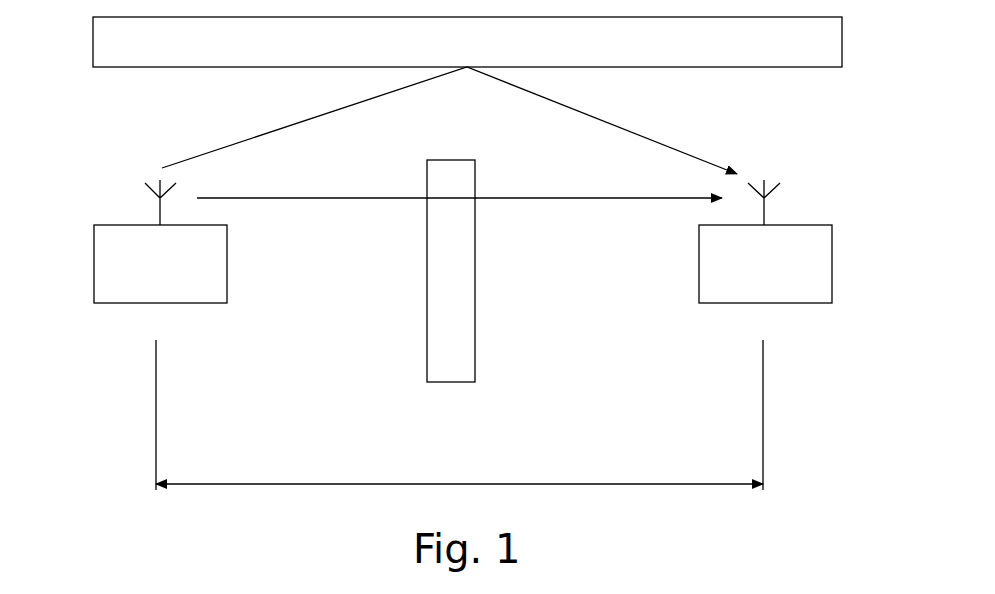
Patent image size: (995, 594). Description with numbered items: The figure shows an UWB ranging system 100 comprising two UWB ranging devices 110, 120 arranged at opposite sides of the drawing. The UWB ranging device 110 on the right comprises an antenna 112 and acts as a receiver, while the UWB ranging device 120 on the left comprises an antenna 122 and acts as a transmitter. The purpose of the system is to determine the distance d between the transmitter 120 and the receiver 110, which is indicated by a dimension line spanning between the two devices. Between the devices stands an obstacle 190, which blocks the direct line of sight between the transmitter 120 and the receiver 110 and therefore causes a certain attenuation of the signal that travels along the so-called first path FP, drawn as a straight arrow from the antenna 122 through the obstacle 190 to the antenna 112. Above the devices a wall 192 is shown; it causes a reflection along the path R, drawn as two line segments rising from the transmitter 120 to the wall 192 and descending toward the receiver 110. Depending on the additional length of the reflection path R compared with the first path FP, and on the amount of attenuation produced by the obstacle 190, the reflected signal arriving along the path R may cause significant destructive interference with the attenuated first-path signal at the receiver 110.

The UWB ranging system 100 is at (76, 84).
The UWB ranging device 110 is at (699, 268).
The antenna 112 is at (766, 213).
The UWB ranging device 120 is at (227, 268).
The antenna 122 is at (158, 212).
The obstacle 190 is at (445, 382).
The wall 192 is at (807, 67).
The reflection path R is at (570, 110).
The first path FP is at (500, 198).
The distance d is at (345, 484).